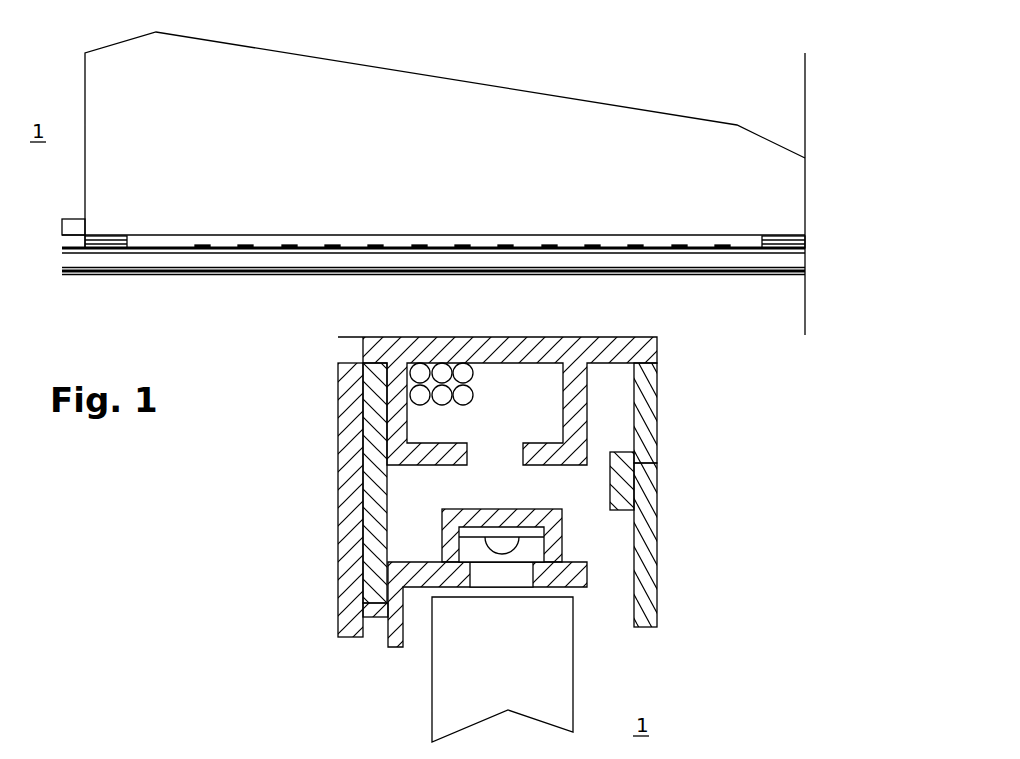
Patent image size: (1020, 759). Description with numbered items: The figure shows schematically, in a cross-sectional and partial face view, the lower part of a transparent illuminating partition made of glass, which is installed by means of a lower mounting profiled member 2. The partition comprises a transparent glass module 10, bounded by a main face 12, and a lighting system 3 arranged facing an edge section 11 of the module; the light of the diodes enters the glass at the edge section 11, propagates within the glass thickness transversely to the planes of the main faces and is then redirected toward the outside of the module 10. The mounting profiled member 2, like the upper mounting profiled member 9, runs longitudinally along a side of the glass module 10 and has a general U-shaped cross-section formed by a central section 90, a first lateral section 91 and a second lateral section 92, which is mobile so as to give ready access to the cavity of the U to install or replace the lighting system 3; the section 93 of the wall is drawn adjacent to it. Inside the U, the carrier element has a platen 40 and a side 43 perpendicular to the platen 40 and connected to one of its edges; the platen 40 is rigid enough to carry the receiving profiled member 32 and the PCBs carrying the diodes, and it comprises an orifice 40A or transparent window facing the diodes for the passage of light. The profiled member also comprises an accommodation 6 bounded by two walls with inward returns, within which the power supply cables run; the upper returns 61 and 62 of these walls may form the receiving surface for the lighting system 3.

The lower mounting profiled member 2 is at (124, 278).
The lighting system 3 is at (267, 242).
The accommodation 6 is at (538, 411).
The upper mounting profiled member 9 is at (322, 392).
The transparent module 10 is at (603, 101).
The edge section 11 is at (443, 238).
The main face 12 is at (303, 100).
The receiving profiled member 32 is at (553, 516).
The platen 40 is at (578, 575).
The orifice 40A is at (508, 580).
The side 43 is at (370, 443).
The upper return 61 is at (560, 456).
The upper return 62 is at (452, 463).
The central section 90 is at (540, 348).
The first lateral section 91 is at (340, 597).
The second lateral section 92 is at (645, 523).
The upper right wall section 93 is at (650, 400).